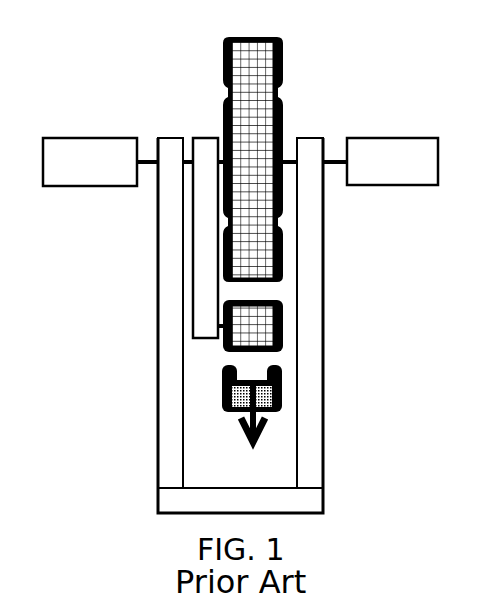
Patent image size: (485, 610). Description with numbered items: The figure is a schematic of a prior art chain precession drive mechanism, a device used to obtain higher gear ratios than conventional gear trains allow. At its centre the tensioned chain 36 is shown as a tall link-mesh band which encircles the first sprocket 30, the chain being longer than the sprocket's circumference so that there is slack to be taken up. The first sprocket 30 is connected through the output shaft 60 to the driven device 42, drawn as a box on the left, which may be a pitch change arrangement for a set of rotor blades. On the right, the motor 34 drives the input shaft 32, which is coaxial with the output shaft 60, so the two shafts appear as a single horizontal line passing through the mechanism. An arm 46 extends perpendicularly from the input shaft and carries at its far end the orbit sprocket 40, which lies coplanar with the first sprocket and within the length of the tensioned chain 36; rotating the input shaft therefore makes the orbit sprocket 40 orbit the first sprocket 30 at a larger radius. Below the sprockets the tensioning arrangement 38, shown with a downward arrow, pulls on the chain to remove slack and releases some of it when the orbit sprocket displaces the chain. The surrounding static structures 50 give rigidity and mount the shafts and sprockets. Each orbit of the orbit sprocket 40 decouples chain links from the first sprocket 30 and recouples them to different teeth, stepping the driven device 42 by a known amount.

The mesh electrode 30 is at (255, 83).
The gap 32 is at (287, 158).
The power supply 34 is at (378, 160).
The tensioned chain 36 is at (263, 146).
The nozzle 38 is at (282, 397).
The filter 40 is at (283, 325).
The controller 42 is at (76, 157).
The baffle 46 is at (206, 218).
The housing 50 is at (170, 368).
The support bar 60 is at (152, 164).